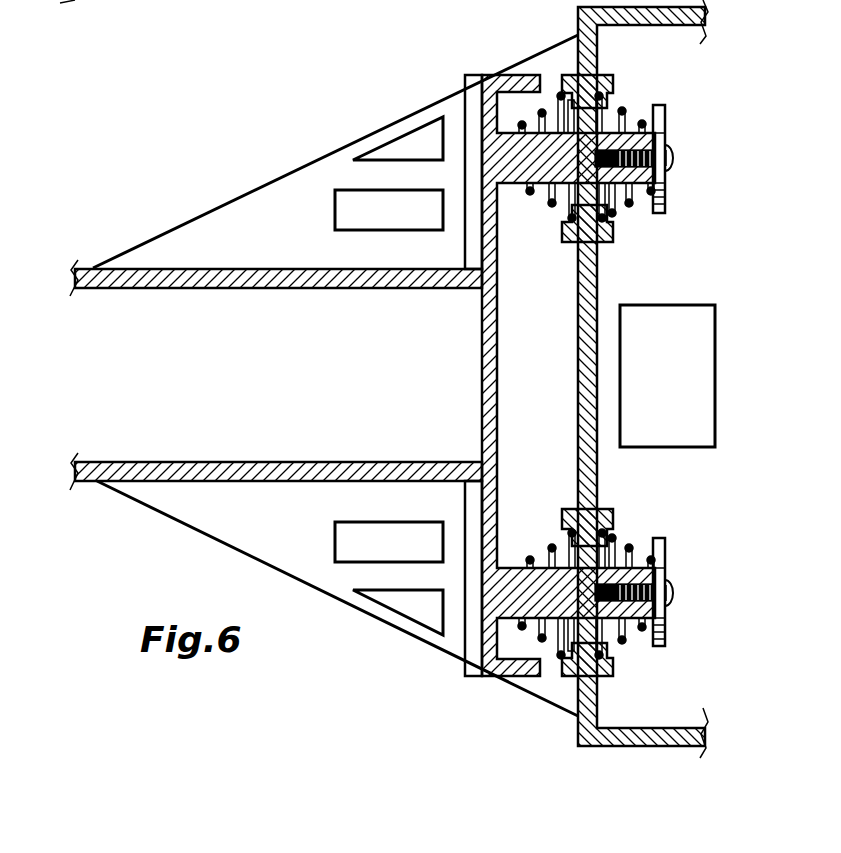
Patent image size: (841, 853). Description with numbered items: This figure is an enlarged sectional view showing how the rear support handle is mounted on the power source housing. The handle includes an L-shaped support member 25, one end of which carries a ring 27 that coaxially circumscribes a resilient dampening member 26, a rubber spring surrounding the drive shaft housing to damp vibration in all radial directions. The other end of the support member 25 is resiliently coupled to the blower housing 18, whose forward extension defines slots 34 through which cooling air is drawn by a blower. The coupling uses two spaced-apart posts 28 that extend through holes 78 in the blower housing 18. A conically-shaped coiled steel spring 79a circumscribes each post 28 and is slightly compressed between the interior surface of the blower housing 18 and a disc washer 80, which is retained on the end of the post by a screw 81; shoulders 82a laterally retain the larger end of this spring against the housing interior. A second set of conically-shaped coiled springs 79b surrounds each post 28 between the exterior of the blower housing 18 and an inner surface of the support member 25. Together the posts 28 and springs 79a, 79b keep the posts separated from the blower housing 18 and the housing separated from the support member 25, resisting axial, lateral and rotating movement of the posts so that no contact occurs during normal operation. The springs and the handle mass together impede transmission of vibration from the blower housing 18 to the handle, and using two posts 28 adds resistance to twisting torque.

The blower housing 18 is at (622, 750).
The L-shaped support member 25 is at (193, 483).
The resilient dampening member 26 is at (70, 0).
The ring 27 is at (167, 0).
The posts 28 is at (490, 150).
The slots 34 is at (380, 153).
The holes 78 is at (570, 203).
The conically-shaped coiled steel springs 79a is at (632, 205).
The conically-shaped coiled steel springs 79b is at (548, 110).
The disc washer 80 is at (662, 105).
The screw 81 is at (672, 155).
The shoulders 82a is at (615, 82).